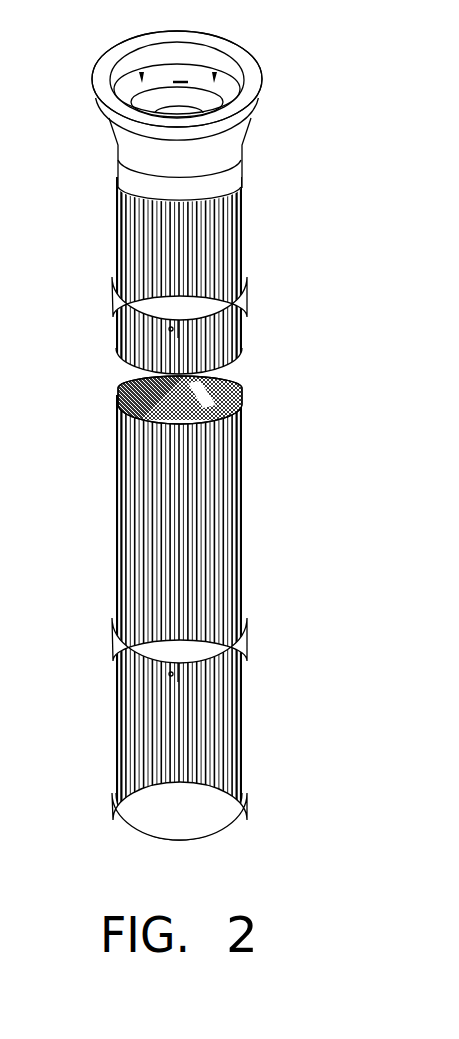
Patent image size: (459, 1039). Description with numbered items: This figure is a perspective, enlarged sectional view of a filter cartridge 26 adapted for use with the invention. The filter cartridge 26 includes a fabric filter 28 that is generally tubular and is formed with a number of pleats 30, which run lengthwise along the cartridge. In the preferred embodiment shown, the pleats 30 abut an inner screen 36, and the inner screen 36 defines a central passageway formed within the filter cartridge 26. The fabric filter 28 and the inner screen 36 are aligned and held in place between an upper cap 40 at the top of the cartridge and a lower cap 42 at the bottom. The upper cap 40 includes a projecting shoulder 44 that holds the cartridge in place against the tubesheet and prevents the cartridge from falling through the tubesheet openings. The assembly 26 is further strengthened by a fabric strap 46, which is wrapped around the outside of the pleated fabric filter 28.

The filter cartridge 26 is at (183, 443).
The fabric filter 28 is at (242, 212).
The pleats 30 is at (240, 388).
The inner screen 36 is at (118, 390).
The upper cap 40 is at (217, 45).
The lower cap 42 is at (225, 835).
The projecting shoulder 44 is at (250, 110).
The fabric strap 46 is at (236, 309).